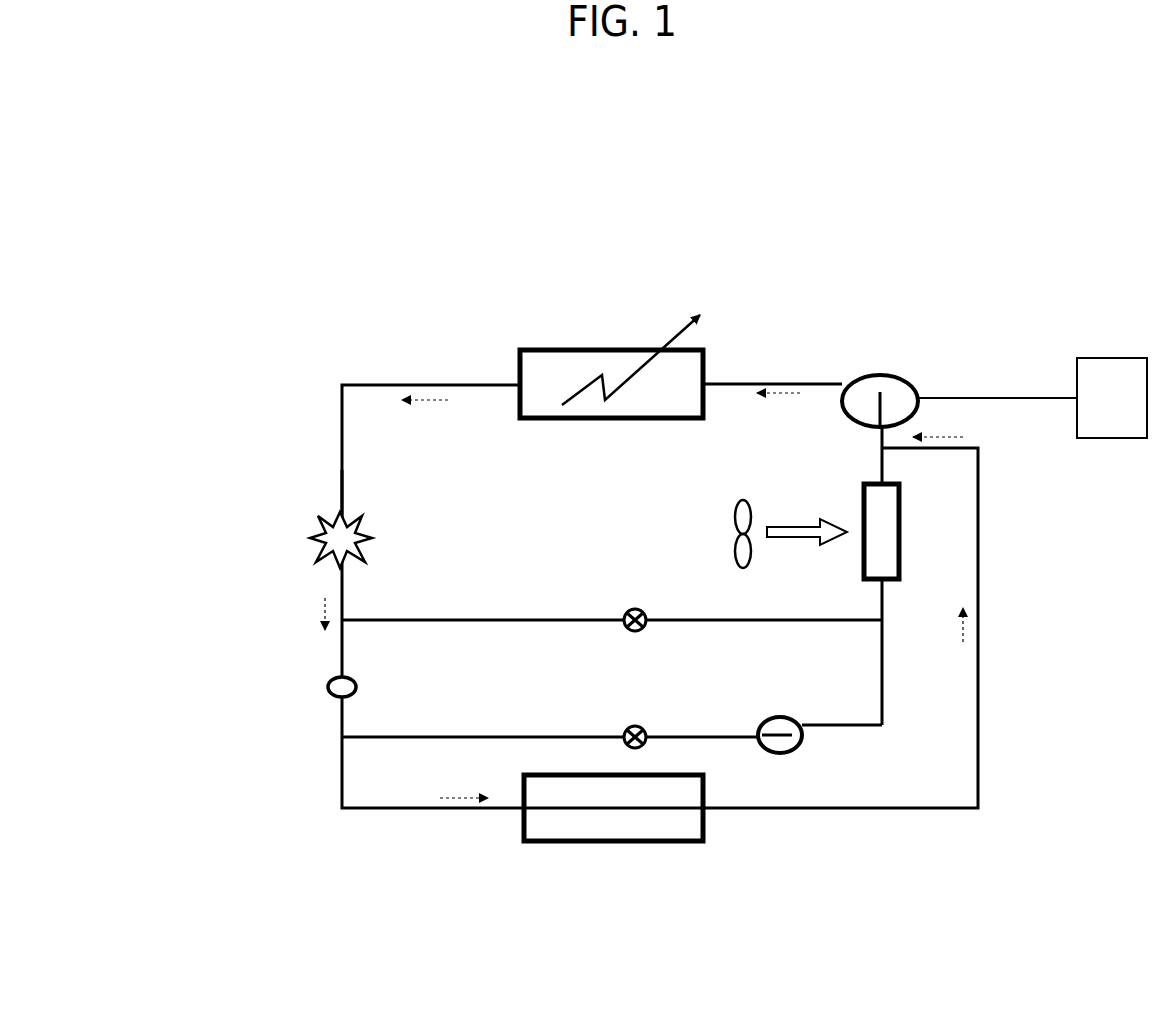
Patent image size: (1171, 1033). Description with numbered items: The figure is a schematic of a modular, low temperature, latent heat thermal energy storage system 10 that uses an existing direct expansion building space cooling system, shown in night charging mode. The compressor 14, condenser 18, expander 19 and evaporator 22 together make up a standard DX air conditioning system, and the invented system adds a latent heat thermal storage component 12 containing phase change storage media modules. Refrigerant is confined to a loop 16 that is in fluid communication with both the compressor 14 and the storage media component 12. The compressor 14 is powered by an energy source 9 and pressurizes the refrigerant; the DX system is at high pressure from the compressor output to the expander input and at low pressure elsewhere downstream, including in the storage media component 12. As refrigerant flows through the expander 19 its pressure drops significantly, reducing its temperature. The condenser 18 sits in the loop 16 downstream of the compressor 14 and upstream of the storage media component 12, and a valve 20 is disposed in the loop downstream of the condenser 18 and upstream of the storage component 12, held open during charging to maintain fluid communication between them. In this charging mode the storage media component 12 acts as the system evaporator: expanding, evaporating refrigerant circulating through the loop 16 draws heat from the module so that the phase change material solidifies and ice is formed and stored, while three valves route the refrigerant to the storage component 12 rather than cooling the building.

The energy source 9 is at (1032, 398).
The modular, low temperature, latent heat thermal energy storage system 10 is at (217, 368).
The latent heat thermal storage component 12 is at (600, 821).
The compressor 14 is at (880, 392).
The loop 16 is at (345, 502).
The condenser 18 is at (555, 377).
The expander 19 is at (315, 538).
The valve 20 is at (328, 688).
The evaporator 22 is at (880, 528).